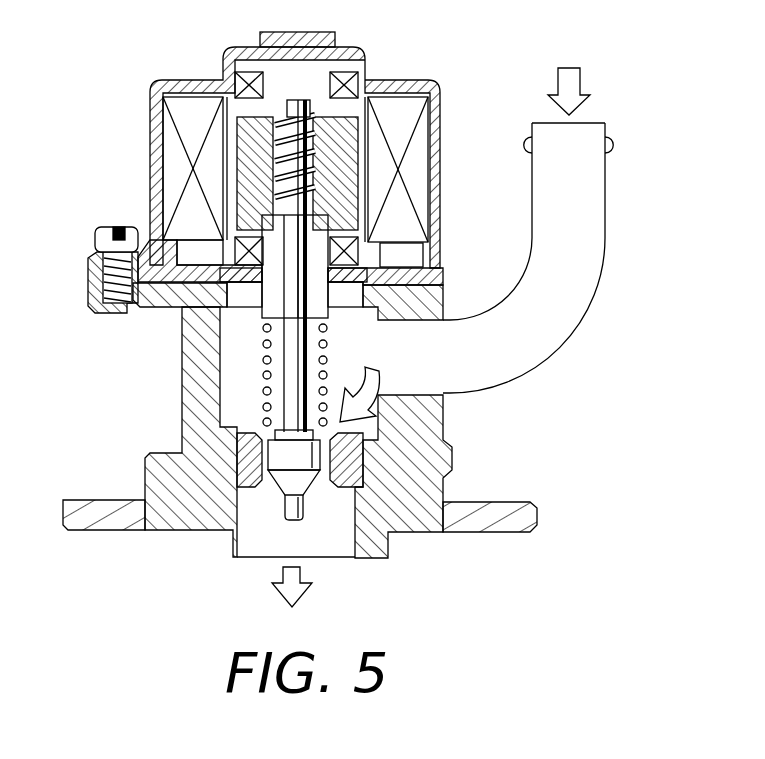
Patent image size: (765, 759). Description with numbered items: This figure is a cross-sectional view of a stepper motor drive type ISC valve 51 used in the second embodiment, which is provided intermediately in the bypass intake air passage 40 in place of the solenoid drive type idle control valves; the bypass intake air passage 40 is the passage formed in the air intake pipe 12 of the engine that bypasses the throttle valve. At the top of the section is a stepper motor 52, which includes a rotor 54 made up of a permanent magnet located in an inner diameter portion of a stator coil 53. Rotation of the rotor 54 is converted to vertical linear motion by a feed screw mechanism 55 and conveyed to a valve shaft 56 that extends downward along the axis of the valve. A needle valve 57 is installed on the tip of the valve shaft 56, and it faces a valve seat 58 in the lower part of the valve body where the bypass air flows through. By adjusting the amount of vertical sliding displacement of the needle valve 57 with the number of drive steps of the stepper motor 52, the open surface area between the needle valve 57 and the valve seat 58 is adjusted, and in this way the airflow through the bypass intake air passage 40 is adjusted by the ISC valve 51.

The air intake pipe 12 is at (85, 500).
The bypass intake air passage 40 is at (578, 330).
The stepper motor drive type ISC valve 51 is at (226, 543).
The stepper motor 52 is at (182, 73).
The stator coil 53 is at (168, 143).
The rotor 54 is at (420, 159).
The feed screw mechanism 55 is at (277, 98).
The valve shaft 56 is at (322, 349).
The needle valve 57 is at (278, 487).
The valve seat 58 is at (332, 500).